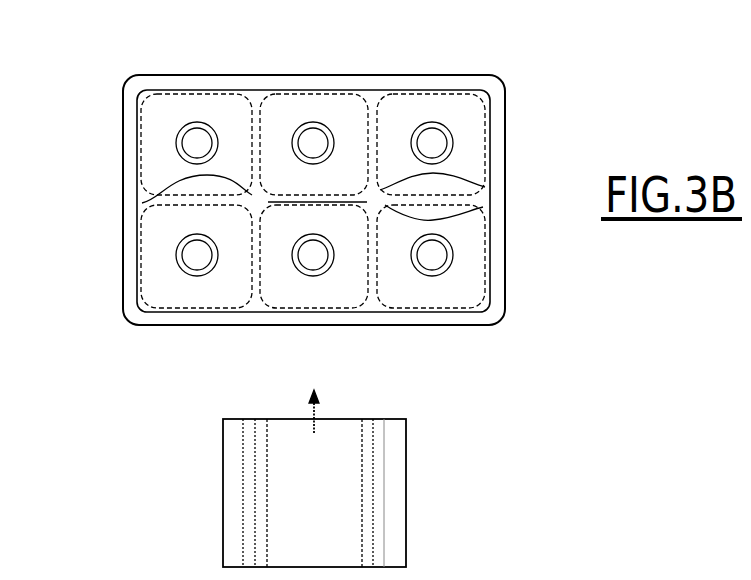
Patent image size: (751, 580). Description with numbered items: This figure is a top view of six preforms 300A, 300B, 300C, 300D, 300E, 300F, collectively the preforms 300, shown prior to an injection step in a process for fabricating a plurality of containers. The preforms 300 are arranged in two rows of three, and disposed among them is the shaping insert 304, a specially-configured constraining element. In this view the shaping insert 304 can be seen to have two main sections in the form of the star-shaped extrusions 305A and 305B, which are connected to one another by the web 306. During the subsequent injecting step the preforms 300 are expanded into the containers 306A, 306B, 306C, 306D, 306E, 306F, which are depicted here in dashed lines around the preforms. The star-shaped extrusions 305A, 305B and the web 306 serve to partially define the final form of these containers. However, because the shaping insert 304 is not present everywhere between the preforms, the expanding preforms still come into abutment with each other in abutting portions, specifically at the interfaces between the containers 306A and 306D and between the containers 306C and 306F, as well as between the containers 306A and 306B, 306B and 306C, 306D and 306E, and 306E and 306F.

The preforms 300 is at (473, 124).
The preform 300A is at (197, 276).
The preform 300B is at (322, 276).
The preform 300C is at (432, 276).
The preform 300D is at (196, 122).
The preform 300E is at (313, 122).
The preform 300F is at (432, 122).
The shaping insert 304 is at (485, 187).
The star-shaped extrusion 305A is at (142, 203).
The star-shaped extrusion 305B is at (483, 207).
The web 306 is at (335, 205).
The container 306A is at (140, 297).
The container 306B is at (265, 312).
The container 306C is at (492, 270).
The container 306D is at (161, 78).
The container 306E is at (295, 78).
The container 306F is at (415, 78).